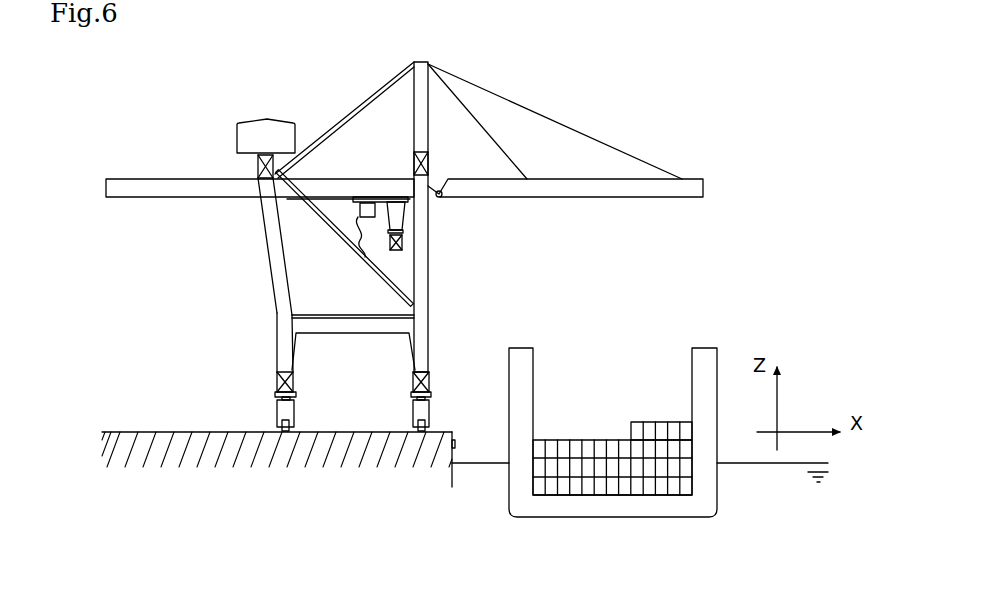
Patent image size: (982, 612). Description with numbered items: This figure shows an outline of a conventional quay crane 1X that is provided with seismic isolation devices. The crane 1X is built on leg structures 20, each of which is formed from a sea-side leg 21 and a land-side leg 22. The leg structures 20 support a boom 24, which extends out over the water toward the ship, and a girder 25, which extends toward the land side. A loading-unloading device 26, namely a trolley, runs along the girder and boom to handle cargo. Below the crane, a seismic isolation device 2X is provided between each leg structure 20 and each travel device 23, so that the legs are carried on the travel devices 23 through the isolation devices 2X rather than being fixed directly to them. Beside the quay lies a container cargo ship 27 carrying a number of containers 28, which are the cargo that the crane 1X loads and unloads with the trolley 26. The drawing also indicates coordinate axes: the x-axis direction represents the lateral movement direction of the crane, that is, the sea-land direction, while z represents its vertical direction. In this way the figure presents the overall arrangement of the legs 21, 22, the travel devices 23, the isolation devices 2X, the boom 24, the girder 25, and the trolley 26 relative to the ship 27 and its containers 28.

The crane 1X is at (124, 111).
The leg structure 20 is at (160, 264).
The sea-side leg 21 is at (420, 287).
The land-side leg 22 is at (277, 270).
The travel device 23 is at (277, 415).
The boom 24 is at (623, 188).
The girder 25 is at (183, 185).
The loading-unloading device 26 is at (360, 251).
The container cargo ship 27 is at (710, 348).
The container 28 is at (637, 423).
The seismic isolation device 2X is at (294, 398).